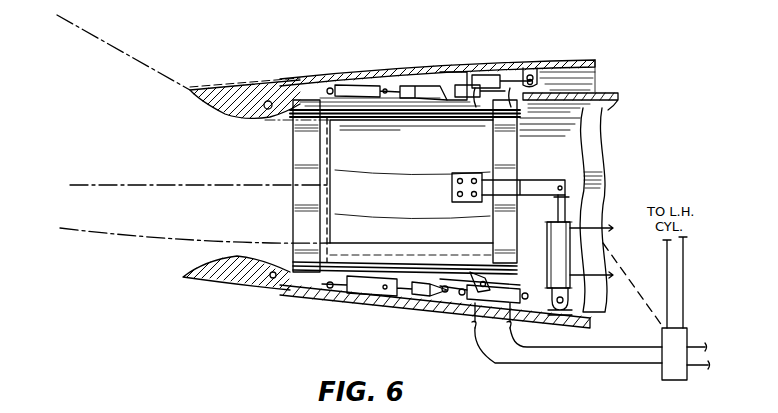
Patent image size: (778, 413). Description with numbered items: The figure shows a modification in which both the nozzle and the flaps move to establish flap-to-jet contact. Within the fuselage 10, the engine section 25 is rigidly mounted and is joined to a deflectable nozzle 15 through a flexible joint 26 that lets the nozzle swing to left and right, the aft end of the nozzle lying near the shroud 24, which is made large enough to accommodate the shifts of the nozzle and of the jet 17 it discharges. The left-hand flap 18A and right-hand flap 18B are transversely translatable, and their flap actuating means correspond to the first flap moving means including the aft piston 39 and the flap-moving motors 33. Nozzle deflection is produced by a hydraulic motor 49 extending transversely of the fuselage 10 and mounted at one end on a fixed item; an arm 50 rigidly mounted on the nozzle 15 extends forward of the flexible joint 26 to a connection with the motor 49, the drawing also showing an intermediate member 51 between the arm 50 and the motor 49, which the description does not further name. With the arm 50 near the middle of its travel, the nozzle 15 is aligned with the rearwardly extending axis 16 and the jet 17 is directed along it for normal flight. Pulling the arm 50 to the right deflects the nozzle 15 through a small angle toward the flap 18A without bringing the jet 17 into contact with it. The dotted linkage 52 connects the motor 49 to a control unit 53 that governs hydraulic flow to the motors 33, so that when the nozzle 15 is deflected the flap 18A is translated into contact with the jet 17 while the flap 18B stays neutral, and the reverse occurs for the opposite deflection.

The fuselage 10 is at (592, 58).
The nozzle 15 is at (417, 155).
The rearwardly extending axis 16 is at (90, 185).
The jet 17 is at (107, 43).
The left-hand flap 18A is at (211, 115).
The right-hand flap 18B is at (205, 280).
The shroud 24 is at (620, 97).
The engine section 25 is at (588, 137).
The flexible joint 26 is at (520, 145).
The flap-moving motor 33 is at (508, 66).
The aft piston 39 is at (465, 75).
The hydraulic motor 49 is at (558, 268).
The arm 50 is at (552, 182).
The piston rod 51 is at (556, 210).
The linkage 52 is at (623, 273).
The control unit 53 is at (672, 378).